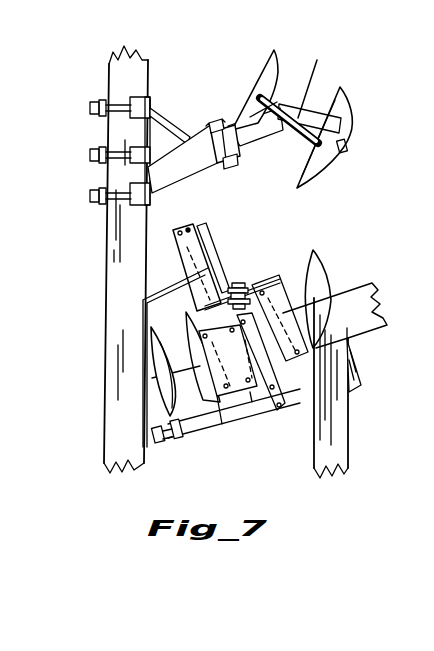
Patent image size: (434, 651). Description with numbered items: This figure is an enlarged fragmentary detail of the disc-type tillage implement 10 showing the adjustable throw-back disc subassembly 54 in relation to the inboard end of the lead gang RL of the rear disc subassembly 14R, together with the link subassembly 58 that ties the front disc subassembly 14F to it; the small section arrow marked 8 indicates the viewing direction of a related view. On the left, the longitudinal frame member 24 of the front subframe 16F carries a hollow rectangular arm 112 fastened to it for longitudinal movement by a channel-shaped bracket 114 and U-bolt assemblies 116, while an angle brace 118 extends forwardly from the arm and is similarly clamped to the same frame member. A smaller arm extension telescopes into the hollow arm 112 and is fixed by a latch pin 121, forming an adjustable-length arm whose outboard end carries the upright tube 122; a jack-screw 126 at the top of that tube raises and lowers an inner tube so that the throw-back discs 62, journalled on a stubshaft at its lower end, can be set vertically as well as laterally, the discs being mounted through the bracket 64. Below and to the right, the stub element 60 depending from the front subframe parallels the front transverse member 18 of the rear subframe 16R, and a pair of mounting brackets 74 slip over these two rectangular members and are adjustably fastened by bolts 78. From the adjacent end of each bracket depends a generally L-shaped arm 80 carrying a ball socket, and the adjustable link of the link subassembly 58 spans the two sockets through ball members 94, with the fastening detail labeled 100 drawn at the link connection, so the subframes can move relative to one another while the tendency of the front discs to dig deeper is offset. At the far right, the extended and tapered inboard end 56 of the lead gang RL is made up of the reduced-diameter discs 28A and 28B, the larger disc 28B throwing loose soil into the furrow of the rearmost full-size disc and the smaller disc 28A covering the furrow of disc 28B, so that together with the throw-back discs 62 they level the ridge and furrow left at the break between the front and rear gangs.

The disc-type tillage implement 10 is at (317, 60).
The section view arrow 8 is at (330, 272).
The front disc subassembly 14F is at (157, 80).
The rear disc subassembly 14R is at (382, 278).
The front subframe 16F is at (112, 286).
The rear subframe 16R is at (313, 445).
The front transverse member 18 is at (385, 296).
The longitudinally extending parallel member 24 is at (117, 250).
The smaller reduced diameter disc 28A is at (196, 362).
The larger reduced diameter disc 28B is at (198, 375).
The adjustable throw-back disc subassembly 54 is at (332, 109).
The tapered inboard end 56 is at (162, 428).
The link subassembly 58 is at (230, 262).
The stub element 60 is at (150, 250).
The throw-back disc 62 is at (268, 55).
The bracket 64 is at (160, 140).
The mounting bracket 74 is at (147, 350).
The bolt 78 is at (194, 216).
The L-shaped arm 80 is at (213, 292).
The ball member 94 is at (265, 302).
The clamp bolt assembly 100 is at (250, 280).
The hollow arm 112 is at (186, 156).
The channel-shaped bracket 114 is at (147, 97).
The U-bolt assembly 116 is at (92, 100).
The angle brace 118 is at (152, 100).
The latch pin 121 is at (226, 176).
The upright tube 122 is at (290, 133).
The jack-screw 126 is at (322, 118).
The rear lead gang RL is at (316, 256).